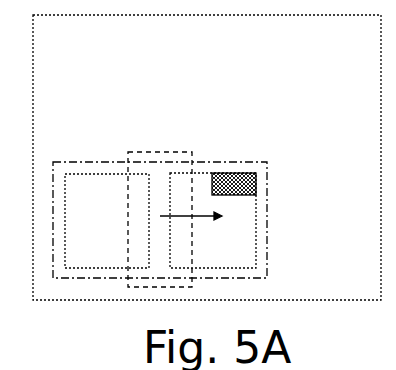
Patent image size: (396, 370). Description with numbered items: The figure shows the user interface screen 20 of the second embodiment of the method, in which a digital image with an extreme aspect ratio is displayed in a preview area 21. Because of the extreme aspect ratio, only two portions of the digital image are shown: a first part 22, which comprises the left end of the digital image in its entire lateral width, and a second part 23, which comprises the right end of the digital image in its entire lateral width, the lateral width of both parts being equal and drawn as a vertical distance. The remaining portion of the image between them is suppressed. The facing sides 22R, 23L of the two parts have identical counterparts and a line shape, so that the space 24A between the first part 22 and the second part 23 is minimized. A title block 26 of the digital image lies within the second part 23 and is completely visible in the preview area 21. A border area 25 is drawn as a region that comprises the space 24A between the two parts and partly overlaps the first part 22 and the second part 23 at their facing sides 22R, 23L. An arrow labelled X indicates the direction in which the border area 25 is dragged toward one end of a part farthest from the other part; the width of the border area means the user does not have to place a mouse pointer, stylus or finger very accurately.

The user interface screen 20 is at (88, 15).
The preview area 21 is at (225, 162).
The first part 22 is at (85, 217).
The facing side of the first part 22R is at (149, 250).
The second part 23 is at (222, 228).
The facing side of the second part 23L is at (170, 250).
The space 24A is at (155, 182).
The border area 25 is at (152, 152).
The title block 26 is at (232, 186).